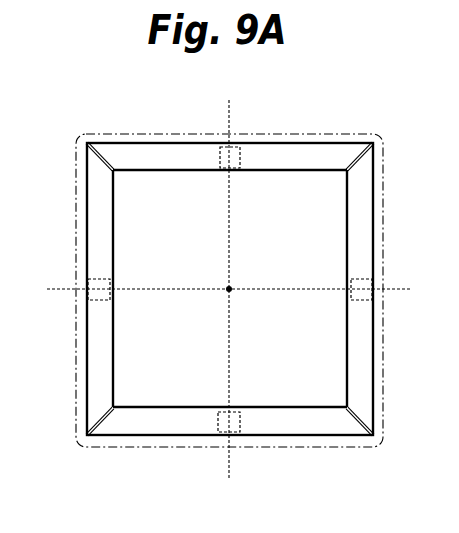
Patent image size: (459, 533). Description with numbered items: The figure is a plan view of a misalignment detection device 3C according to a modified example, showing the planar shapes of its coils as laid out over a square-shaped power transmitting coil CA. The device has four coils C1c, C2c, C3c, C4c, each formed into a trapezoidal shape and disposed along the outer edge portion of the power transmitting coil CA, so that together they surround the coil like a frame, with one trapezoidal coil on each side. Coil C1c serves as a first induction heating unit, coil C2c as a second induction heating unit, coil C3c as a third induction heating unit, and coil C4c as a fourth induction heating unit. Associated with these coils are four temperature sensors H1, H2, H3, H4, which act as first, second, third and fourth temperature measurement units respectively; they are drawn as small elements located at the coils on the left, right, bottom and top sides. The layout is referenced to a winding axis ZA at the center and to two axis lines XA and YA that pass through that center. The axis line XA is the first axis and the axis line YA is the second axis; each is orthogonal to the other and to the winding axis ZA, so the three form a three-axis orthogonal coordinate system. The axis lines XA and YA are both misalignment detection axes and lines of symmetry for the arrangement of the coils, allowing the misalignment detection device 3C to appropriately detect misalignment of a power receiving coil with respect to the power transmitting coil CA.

The misalignment detection device 3C is at (336, 84).
The power transmitting coil CA is at (352, 134).
The coil C1c is at (77, 210).
The coil C2c is at (383, 205).
The coil C3c is at (167, 437).
The coil C4c is at (278, 143).
The axis line YA is at (227, 123).
The axis line XA is at (398, 289).
The winding axis ZA is at (227, 288).
The temperature sensor H1 is at (98, 280).
The temperature sensor H2 is at (362, 300).
The temperature sensor H3 is at (240, 424).
The temperature sensor H4 is at (238, 153).